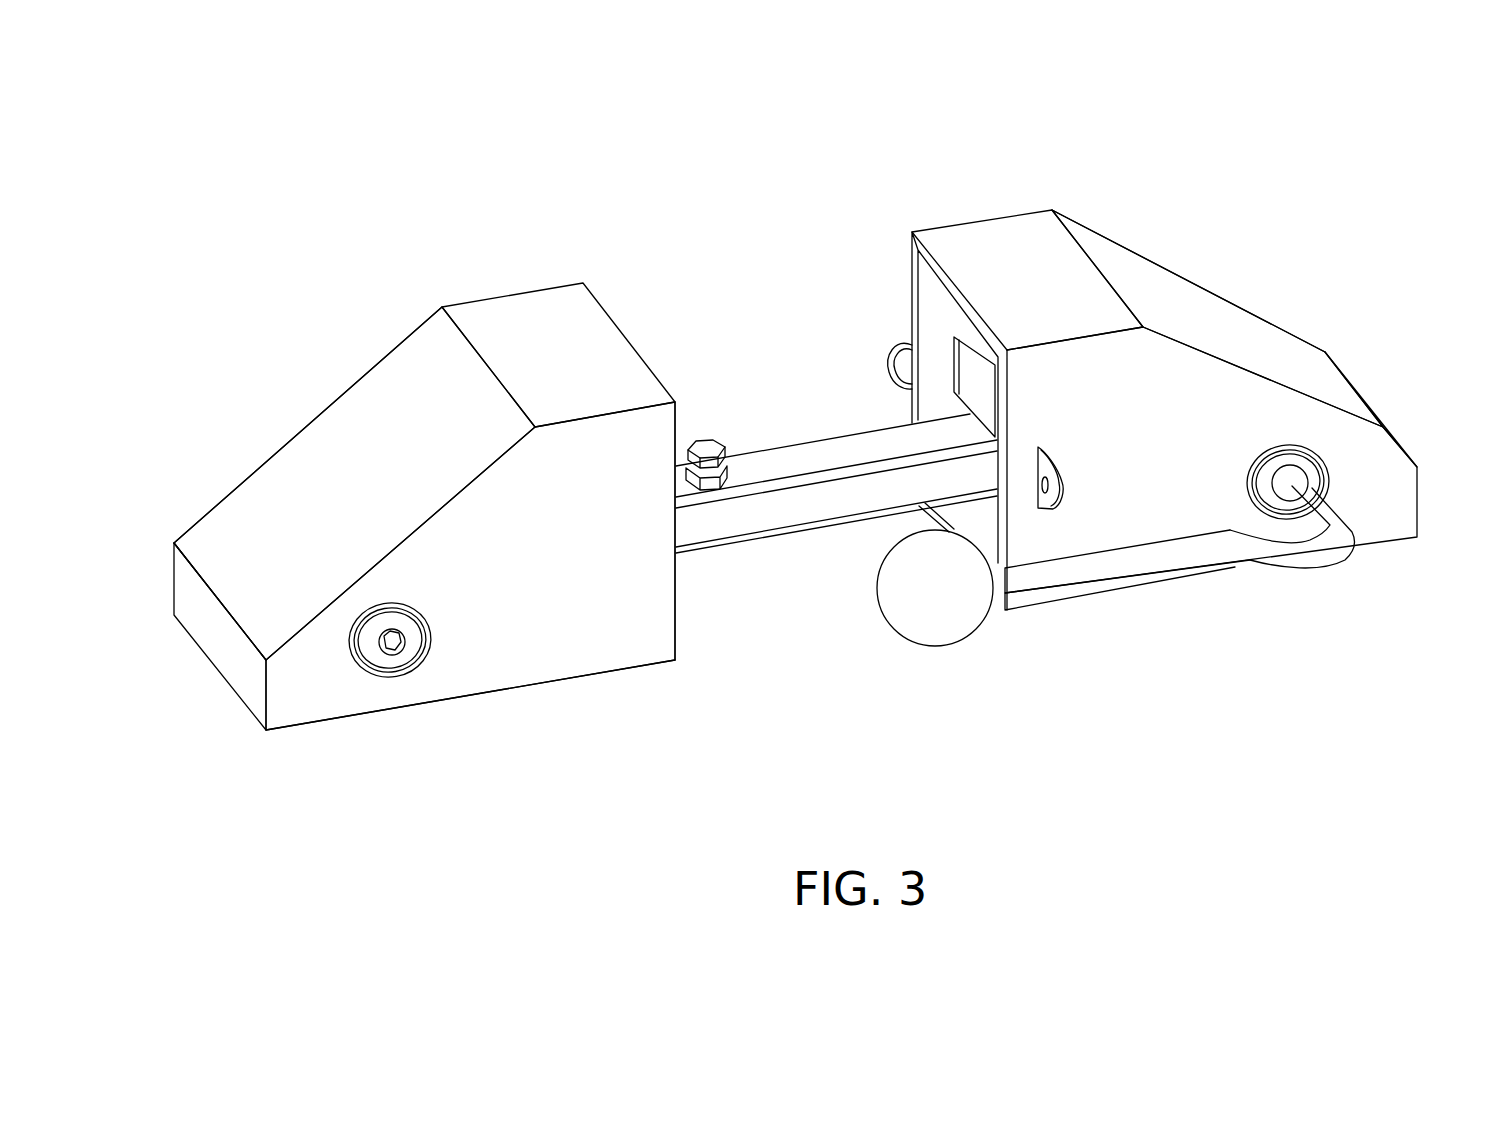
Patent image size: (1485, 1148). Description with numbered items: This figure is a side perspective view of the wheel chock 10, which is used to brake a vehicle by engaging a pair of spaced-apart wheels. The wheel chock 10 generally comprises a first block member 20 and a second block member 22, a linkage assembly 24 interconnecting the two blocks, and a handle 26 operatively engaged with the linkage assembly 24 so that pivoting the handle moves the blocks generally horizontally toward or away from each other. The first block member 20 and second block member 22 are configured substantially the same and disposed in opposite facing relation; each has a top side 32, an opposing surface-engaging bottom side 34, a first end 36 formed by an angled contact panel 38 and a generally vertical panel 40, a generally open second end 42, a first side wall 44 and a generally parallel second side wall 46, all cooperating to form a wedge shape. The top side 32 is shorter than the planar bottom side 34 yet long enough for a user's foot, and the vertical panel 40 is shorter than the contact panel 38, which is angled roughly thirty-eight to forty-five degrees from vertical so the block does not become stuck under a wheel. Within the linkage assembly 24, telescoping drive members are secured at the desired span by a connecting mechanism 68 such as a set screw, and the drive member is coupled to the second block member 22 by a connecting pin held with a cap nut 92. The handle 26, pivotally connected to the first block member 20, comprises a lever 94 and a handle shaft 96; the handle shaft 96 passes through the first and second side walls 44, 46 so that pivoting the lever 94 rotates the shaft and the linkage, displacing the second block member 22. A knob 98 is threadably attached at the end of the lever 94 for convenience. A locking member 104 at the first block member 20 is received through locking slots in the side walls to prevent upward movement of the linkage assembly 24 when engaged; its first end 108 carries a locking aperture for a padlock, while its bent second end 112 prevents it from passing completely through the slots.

The wheel chock 10 is at (707, 375).
The first block member 20 is at (1036, 407).
The second block member 22 is at (794, 498).
The linkage assembly 24 is at (742, 542).
The handle 26 is at (1179, 578).
The top side 32 is at (545, 297).
The bottom side 34 is at (322, 727).
The first end 36 is at (404, 375).
The angled contact panel 38 is at (293, 451).
The vertical panel 40 is at (223, 663).
The second end 42 is at (624, 320).
The first side wall 44 is at (1273, 413).
The second side wall 46 is at (583, 667).
The connecting mechanism 68 is at (712, 440).
The cap nut 92 is at (393, 652).
The lever 94 is at (1190, 562).
The handle shaft 96 is at (1335, 512).
The knob 98 is at (938, 640).
The locking member 104 is at (965, 387).
The first end 108 is at (1049, 503).
The second end 112 is at (888, 353).